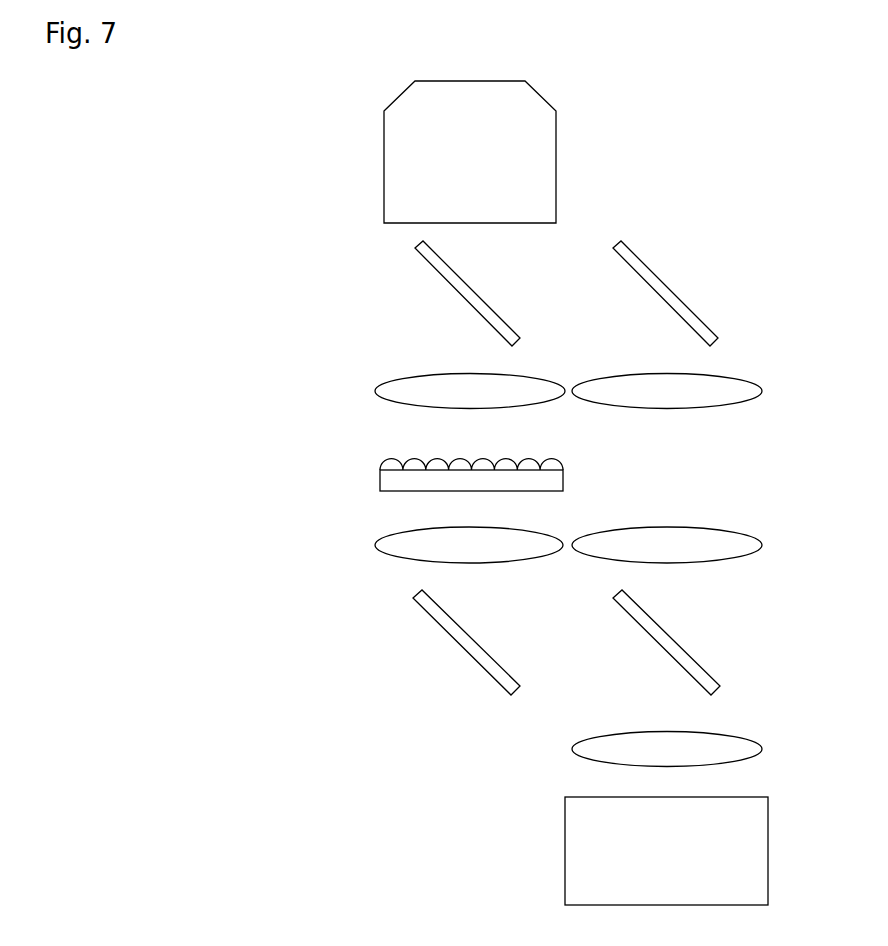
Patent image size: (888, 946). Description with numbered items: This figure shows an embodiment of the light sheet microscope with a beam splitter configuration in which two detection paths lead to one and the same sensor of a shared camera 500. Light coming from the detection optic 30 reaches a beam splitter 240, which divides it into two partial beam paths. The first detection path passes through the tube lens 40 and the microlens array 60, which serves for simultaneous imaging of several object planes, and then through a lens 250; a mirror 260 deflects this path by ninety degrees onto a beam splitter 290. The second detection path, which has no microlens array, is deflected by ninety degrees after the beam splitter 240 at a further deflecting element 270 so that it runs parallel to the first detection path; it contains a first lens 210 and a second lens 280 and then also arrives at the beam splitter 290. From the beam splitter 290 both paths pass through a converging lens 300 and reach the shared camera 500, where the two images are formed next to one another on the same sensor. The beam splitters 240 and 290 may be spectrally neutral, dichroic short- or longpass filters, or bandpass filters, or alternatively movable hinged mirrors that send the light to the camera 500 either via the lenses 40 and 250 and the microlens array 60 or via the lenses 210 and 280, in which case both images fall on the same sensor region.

The detection optic 30 is at (405, 137).
The beam splitter 240 is at (432, 270).
The second beam splitter 270 is at (663, 278).
The tube lens 40 is at (390, 393).
The first lens 210 is at (762, 393).
The microlens array 60 is at (380, 480).
The lens 250 is at (390, 547).
The second lens 280 is at (762, 546).
The mirror 260 is at (455, 632).
The beam splitter 290 is at (715, 675).
The converging lens 300 is at (587, 750).
The shared camera 500 is at (580, 828).